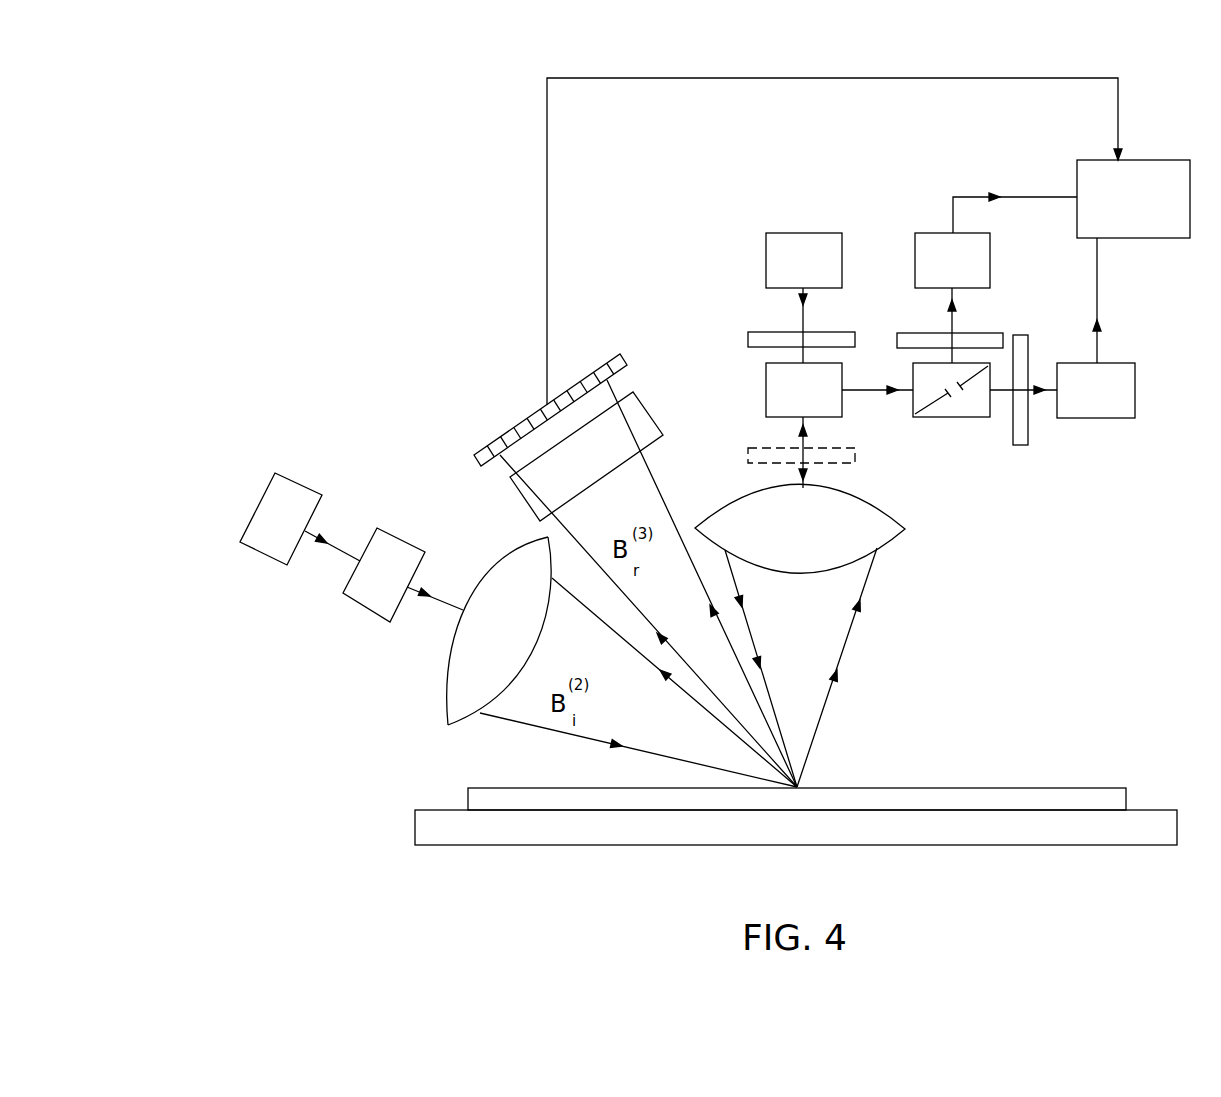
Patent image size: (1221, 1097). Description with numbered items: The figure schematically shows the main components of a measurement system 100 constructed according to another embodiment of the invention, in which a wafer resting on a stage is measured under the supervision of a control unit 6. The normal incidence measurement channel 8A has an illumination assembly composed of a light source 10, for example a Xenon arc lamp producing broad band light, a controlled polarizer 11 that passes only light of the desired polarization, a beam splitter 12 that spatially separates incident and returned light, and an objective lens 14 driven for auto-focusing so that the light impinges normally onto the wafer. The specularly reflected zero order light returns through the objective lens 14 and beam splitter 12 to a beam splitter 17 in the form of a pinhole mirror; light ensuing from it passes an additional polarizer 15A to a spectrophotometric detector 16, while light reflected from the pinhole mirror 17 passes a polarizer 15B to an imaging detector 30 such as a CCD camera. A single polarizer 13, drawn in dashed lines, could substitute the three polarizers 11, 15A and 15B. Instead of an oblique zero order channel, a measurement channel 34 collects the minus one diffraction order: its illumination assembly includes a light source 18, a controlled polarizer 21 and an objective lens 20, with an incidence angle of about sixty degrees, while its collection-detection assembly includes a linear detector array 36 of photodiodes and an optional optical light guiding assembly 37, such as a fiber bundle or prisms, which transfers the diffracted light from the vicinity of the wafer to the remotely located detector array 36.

The measurement system 100 is at (408, 165).
The control unit 6 is at (1135, 160).
The light source 10 is at (805, 233).
The controlled polarizer 11 is at (743, 328).
The beam splitter 12 is at (765, 385).
The single polarizer 13 is at (748, 447).
The objective lens 14 is at (887, 542).
The imaging detector 30 is at (938, 233).
The polarizer 15A is at (1023, 334).
The polarizer 15B is at (997, 330).
The spectrophotometric detector 16 is at (1137, 390).
The beam splitter 17 is at (930, 417).
The linear detector array 36 is at (503, 453).
The optical light guiding assembly 37 is at (513, 500).
The light source 18 is at (256, 510).
The controlled polarizer 21 is at (363, 607).
The objective lens 20 is at (440, 687).
The measurement channel 34 is at (397, 435).
The measurement channel 8A is at (962, 515).